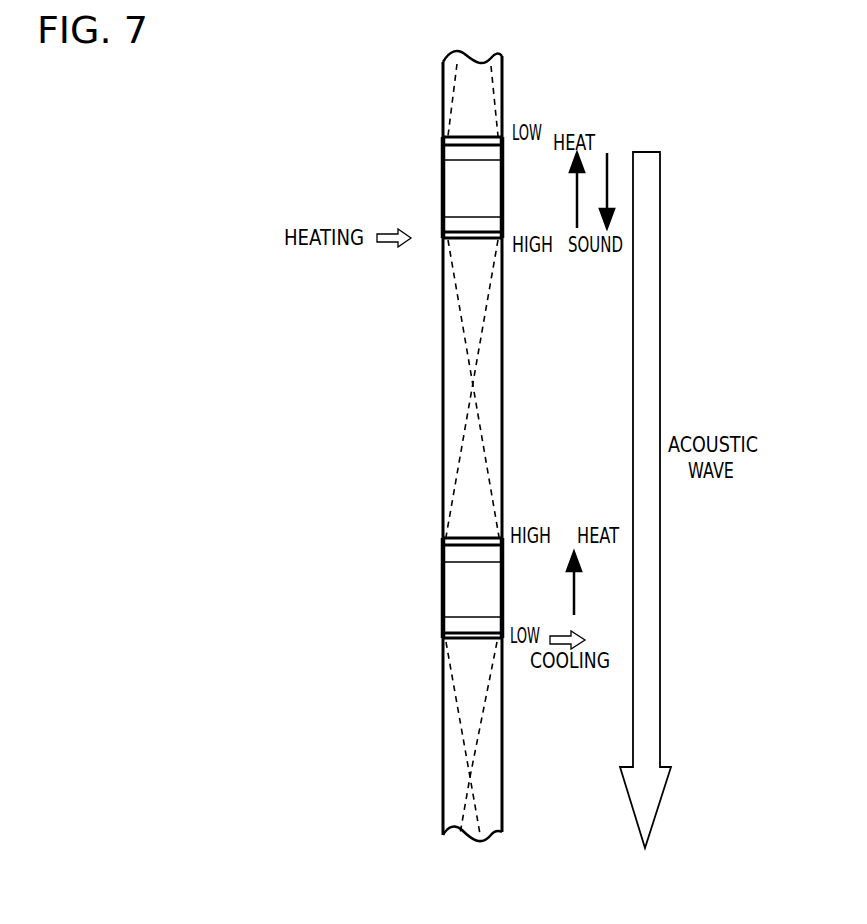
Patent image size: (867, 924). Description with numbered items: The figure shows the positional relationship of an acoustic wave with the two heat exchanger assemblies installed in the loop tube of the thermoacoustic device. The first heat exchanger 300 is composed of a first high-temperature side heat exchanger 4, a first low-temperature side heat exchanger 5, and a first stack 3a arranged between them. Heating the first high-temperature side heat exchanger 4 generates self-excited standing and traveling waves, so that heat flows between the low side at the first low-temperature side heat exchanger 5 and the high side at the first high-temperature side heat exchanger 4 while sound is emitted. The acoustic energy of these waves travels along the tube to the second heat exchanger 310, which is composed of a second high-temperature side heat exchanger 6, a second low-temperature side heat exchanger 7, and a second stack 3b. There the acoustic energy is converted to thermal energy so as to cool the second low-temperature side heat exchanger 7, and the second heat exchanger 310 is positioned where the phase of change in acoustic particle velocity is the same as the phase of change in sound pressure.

The first heat exchanger 300 is at (380, 185).
The first low-temperature side heat exchanger 5 is at (443, 138).
The first stack 3a is at (472, 187).
The first high-temperature side heat exchanger 4 is at (443, 238).
The second heat exchanger 310 is at (376, 597).
The second high-temperature side heat exchanger 6 is at (443, 539).
The second stack 3b is at (455, 590).
The second low-temperature side heat exchanger 7 is at (443, 640).